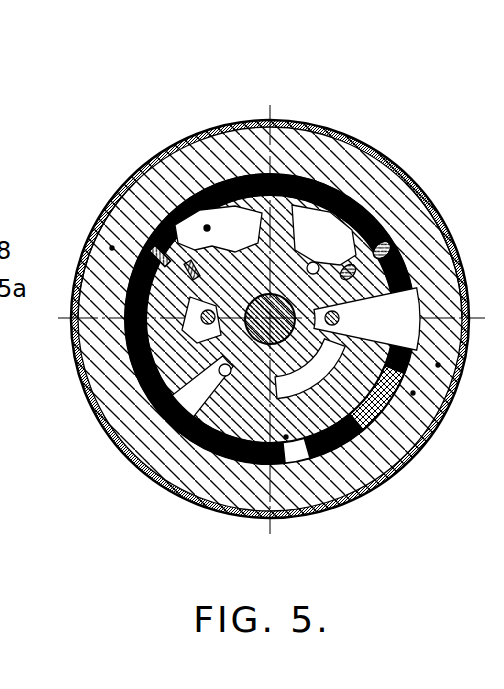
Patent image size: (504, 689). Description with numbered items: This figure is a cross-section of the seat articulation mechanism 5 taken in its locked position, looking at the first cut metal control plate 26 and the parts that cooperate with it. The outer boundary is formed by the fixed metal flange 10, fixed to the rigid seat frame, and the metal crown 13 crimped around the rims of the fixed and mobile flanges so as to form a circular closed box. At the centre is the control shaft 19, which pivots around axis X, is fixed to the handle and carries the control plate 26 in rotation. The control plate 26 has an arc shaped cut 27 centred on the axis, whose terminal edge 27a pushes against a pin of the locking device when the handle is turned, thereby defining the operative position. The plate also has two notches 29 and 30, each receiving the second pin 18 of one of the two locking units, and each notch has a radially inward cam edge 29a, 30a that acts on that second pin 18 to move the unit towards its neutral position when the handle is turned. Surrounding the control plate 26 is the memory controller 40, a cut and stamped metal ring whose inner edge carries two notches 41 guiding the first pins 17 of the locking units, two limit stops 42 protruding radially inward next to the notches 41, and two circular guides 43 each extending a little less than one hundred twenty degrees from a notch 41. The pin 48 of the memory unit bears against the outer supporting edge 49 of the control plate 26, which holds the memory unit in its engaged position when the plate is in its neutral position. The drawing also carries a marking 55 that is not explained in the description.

The mechanism 5 is at (120, 126).
The fixed metal flange 10 is at (336, 152).
The metal crown 13 is at (315, 176).
The first pin 17 is at (408, 247).
The second pin 18 is at (397, 279).
The control shaft 19 is at (146, 467).
The first cut metal control plate 26 is at (346, 210).
The arc shaped cut 27 is at (363, 446).
The terminal edge 27a is at (286, 437).
The notch 29 is at (374, 296).
The cam edge 29a is at (438, 365).
The notch 30 is at (172, 200).
The cam edge 30a is at (233, 215).
The memory controller 40 is at (256, 456).
The notch 41 is at (382, 250).
The limit stop 42 is at (207, 225).
The circular guide 43 is at (376, 166).
The pin 48 is at (398, 418).
The outer supporting edge 49 is at (413, 393).
The shaft 55 is at (10, 315).